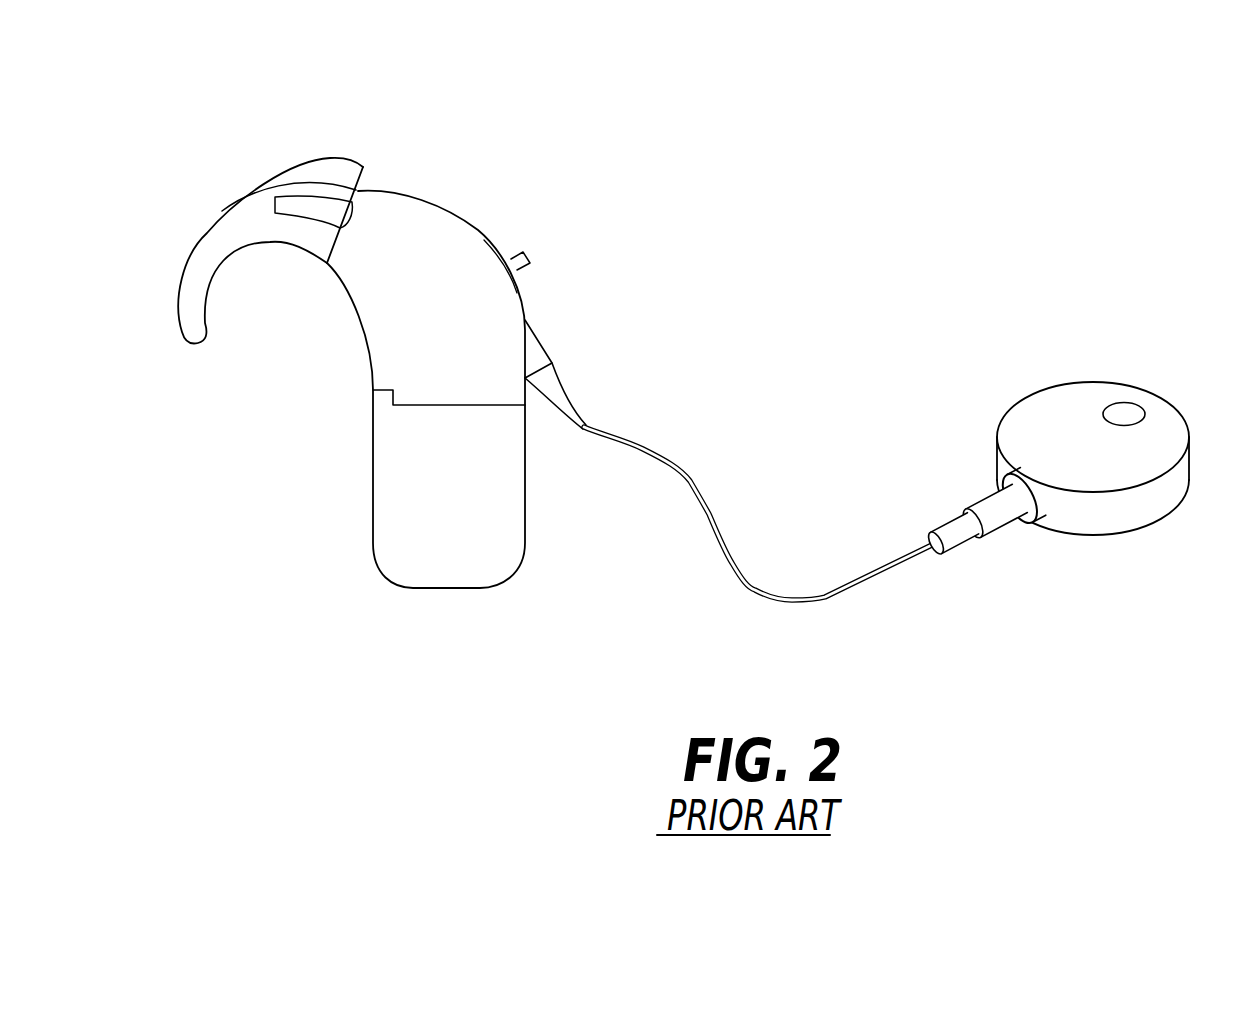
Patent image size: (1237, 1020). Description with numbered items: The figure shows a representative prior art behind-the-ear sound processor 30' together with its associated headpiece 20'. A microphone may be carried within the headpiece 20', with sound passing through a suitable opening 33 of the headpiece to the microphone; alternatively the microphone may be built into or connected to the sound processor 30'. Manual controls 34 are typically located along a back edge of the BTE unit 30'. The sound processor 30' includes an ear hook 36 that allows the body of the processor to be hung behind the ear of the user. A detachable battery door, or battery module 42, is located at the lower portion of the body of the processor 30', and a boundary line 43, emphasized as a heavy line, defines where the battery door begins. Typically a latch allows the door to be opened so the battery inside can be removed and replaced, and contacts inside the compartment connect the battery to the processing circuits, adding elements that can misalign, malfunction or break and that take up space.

The behind-the-ear (BTE) sound processor 30' is at (485, 330).
The ear hook 36 is at (211, 278).
The manual controls 34 is at (530, 258).
The battery module 42 is at (467, 538).
The boundary line 43 is at (410, 407).
The headpiece 20' is at (1053, 428).
The opening 33 is at (1124, 414).